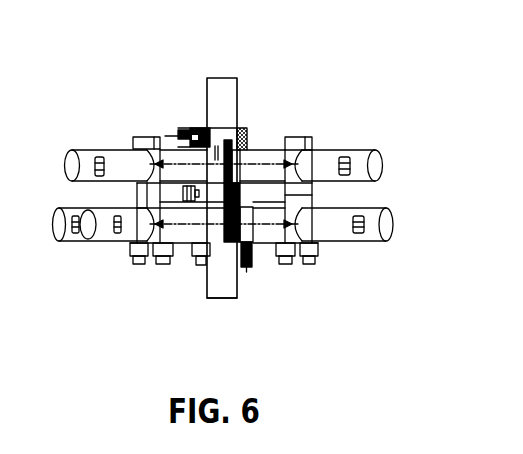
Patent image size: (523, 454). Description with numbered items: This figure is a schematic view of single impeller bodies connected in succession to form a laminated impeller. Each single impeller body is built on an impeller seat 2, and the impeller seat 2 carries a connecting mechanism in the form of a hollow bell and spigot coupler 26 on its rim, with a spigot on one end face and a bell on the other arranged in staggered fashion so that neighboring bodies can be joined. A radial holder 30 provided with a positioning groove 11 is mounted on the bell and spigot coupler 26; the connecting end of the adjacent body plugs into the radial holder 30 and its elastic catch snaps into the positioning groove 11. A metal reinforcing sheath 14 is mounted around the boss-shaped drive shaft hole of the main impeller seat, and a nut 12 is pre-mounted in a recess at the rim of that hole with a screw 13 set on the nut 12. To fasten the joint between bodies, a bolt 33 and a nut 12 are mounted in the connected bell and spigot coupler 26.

The impeller seat 2 is at (269, 93).
The positioning groove 11 is at (98, 266).
The nut 12 is at (175, 170).
The screw 13 is at (120, 95).
The metal reinforcing sheath 14 is at (229, 87).
The hollow bell and spigot coupler 26 is at (275, 285).
The radial holder 30 is at (370, 93).
The bolt 33 is at (287, 267).